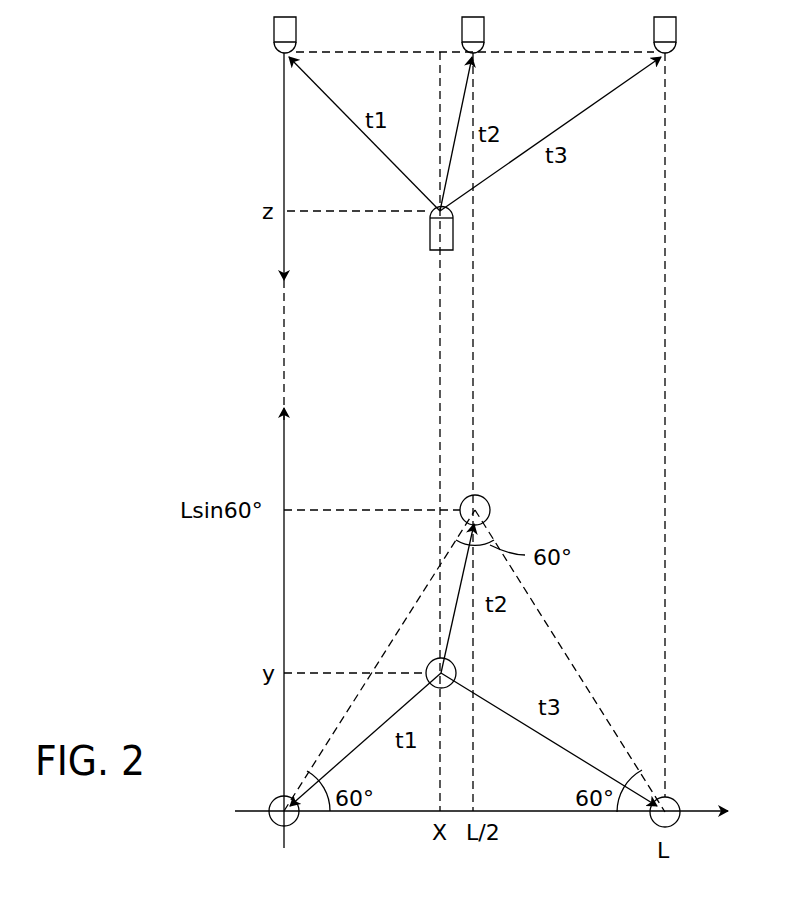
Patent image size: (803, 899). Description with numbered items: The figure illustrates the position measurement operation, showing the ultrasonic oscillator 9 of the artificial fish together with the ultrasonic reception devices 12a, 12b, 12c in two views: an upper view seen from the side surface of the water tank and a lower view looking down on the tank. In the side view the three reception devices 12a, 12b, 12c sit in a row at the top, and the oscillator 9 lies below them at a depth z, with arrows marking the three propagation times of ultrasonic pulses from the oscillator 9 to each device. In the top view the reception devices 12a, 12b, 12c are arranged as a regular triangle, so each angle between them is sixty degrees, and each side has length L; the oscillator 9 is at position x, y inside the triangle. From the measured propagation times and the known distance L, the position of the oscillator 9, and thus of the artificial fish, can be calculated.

The ultrasonic reception device 12a is at (272, 33).
The ultrasonic reception device 12b is at (460, 33).
The ultrasonic reception device 12c is at (652, 33).
The ultrasonic oscillator 9 is at (438, 252).